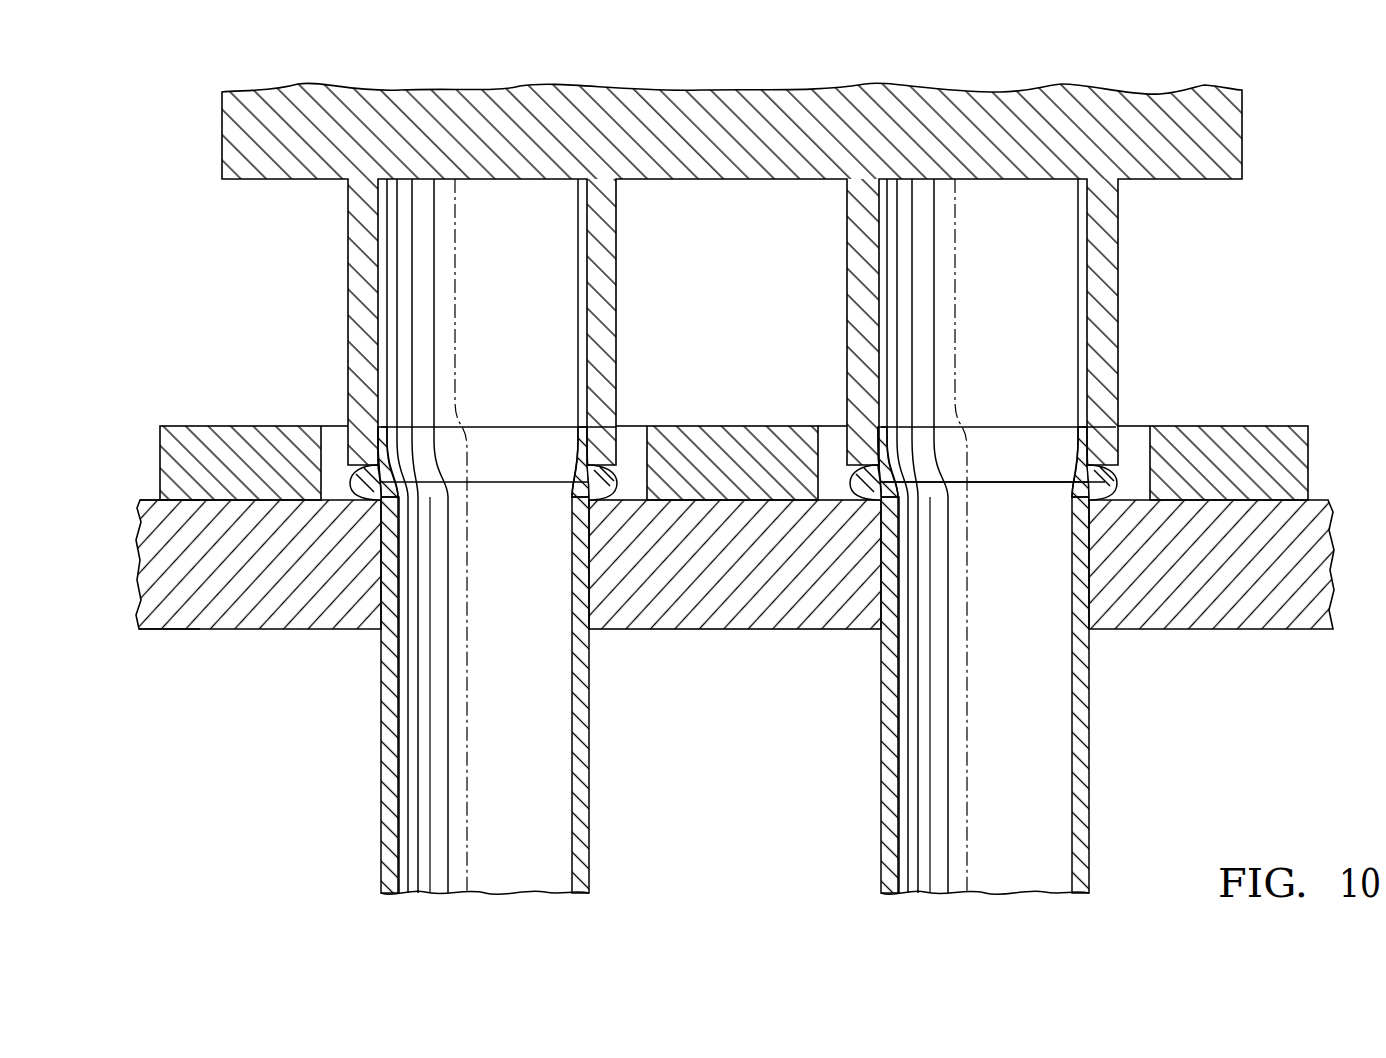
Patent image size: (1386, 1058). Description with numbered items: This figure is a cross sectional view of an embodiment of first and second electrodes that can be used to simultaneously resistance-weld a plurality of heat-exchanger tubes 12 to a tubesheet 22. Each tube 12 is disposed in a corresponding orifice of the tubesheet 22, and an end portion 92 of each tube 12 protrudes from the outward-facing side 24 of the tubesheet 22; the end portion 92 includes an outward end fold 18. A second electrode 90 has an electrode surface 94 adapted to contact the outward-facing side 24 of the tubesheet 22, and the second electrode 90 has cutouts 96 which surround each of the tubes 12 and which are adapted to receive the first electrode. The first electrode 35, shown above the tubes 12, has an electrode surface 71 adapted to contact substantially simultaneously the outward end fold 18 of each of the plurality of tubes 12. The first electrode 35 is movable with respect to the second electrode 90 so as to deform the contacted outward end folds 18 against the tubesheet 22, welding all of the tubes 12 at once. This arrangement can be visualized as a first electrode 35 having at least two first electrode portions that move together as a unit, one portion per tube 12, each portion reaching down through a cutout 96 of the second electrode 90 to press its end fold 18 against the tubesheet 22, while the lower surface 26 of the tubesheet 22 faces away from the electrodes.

The heat-exchanger tube 12 is at (590, 817).
The outward end fold 18 is at (350, 475).
The tubesheet 22 is at (202, 629).
The outward-facing side 24 is at (150, 500).
The lower surface of plate 26 is at (157, 629).
The first electrode 35 is at (222, 146).
The electrode surface 71 is at (583, 482).
The second electrode 90 is at (723, 420).
The end portion 92 is at (1060, 447).
The electrode surface 94 is at (183, 500).
The cutouts 96 is at (1137, 437).